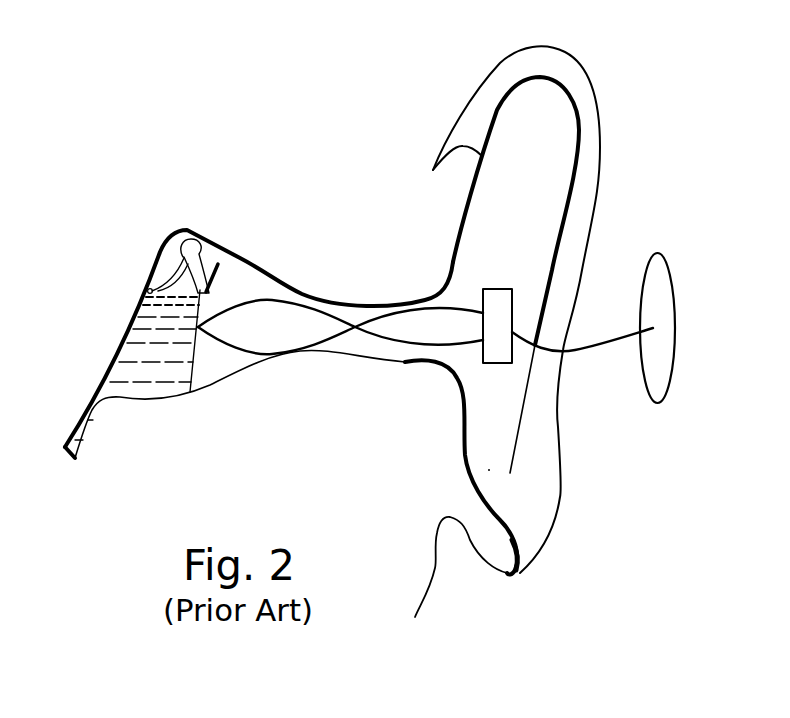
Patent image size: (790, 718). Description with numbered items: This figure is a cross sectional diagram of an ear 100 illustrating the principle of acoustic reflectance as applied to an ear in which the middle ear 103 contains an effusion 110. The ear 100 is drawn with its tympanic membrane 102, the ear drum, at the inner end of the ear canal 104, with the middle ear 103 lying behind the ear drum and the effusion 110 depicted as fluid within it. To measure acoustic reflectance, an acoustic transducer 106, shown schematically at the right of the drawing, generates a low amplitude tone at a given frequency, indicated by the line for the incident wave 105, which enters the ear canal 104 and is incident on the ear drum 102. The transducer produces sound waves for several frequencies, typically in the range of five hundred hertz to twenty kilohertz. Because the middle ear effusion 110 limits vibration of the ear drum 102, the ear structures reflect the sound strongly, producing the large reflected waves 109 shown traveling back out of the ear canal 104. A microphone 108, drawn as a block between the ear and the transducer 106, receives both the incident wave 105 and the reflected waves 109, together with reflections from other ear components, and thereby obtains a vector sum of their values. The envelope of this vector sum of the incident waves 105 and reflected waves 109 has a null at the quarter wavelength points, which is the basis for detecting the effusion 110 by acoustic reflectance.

The ear 100 is at (592, 73).
The tympanic membrane 102 is at (225, 278).
The middle ear 103 is at (175, 257).
The ear canal 104 is at (222, 372).
The incident wave 105 is at (584, 346).
The acoustic transducer 106 is at (670, 273).
The microphone 108 is at (479, 369).
The reflected waves 109 is at (297, 300).
The effusion 110 is at (134, 355).